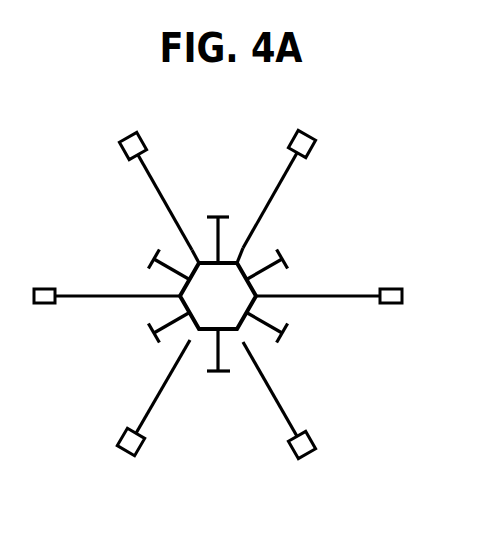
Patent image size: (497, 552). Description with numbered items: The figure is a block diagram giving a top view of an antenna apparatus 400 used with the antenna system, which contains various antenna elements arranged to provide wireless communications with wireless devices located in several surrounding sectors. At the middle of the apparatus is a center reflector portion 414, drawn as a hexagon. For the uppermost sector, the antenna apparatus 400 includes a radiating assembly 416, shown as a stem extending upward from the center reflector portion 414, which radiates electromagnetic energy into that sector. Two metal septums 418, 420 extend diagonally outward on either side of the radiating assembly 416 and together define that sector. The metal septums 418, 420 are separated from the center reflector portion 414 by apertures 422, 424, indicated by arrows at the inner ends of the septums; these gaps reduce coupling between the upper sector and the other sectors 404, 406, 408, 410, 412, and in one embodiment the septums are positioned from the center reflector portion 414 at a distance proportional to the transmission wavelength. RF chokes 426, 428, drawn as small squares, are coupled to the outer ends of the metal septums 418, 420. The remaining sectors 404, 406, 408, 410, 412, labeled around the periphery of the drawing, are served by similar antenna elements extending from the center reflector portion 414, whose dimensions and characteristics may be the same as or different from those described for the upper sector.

The antenna apparatus 400 is at (92, 71).
The sector 404 is at (50, 248).
The sector 406 is at (67, 391).
The sector 408 is at (228, 471).
The sector 410 is at (399, 400).
The sector 412 is at (417, 248).
The center reflector portion 414 is at (237, 306).
The radiating assembly 416 is at (220, 211).
The metal septum 418 is at (157, 200).
The metal septum 420 is at (283, 190).
The aperture 422 is at (200, 248).
The aperture 424 is at (236, 248).
The RF choke 426 is at (121, 148).
The RF choke 428 is at (312, 152).